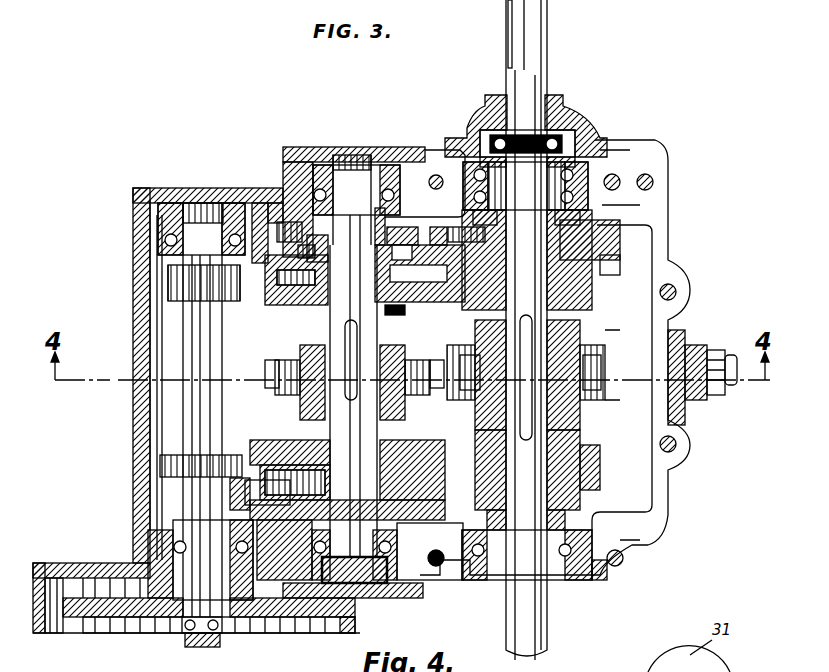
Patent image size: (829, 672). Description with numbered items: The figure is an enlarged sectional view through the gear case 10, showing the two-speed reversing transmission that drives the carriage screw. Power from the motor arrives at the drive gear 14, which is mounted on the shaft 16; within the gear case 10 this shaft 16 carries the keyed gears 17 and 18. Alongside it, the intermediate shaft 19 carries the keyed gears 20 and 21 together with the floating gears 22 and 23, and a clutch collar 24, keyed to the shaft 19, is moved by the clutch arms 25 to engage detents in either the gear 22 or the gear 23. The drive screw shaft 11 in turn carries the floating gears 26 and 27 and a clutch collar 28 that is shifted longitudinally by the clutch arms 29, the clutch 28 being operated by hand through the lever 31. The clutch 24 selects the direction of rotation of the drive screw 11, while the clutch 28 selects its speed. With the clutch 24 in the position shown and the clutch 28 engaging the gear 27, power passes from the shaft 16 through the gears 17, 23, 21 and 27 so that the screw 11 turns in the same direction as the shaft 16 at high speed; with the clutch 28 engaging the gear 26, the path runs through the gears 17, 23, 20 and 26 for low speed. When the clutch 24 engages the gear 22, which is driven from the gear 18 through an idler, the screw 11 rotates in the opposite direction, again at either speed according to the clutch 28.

The gear case 10 is at (135, 445).
The drive screw shaft 11 is at (508, 636).
The drive gear 14 is at (357, 620).
The shaft 16 is at (185, 413).
The keyed gear 17 is at (150, 470).
The keyed gear 18 is at (175, 281).
The intermediate shaft 19 is at (330, 332).
The keyed gear 20 is at (268, 195).
The keyed gear 21 is at (450, 523).
The floating gear 22 is at (282, 300).
The floating gear 23 is at (290, 442).
The clutch collar 24 is at (300, 357).
The clutch arms 25 is at (440, 395).
The floating gear 26 is at (628, 262).
The floating gear 27 is at (595, 480).
The clutch collar 28 is at (585, 348).
The clutch arms 29 is at (610, 350).
The lever 31 is at (700, 340).